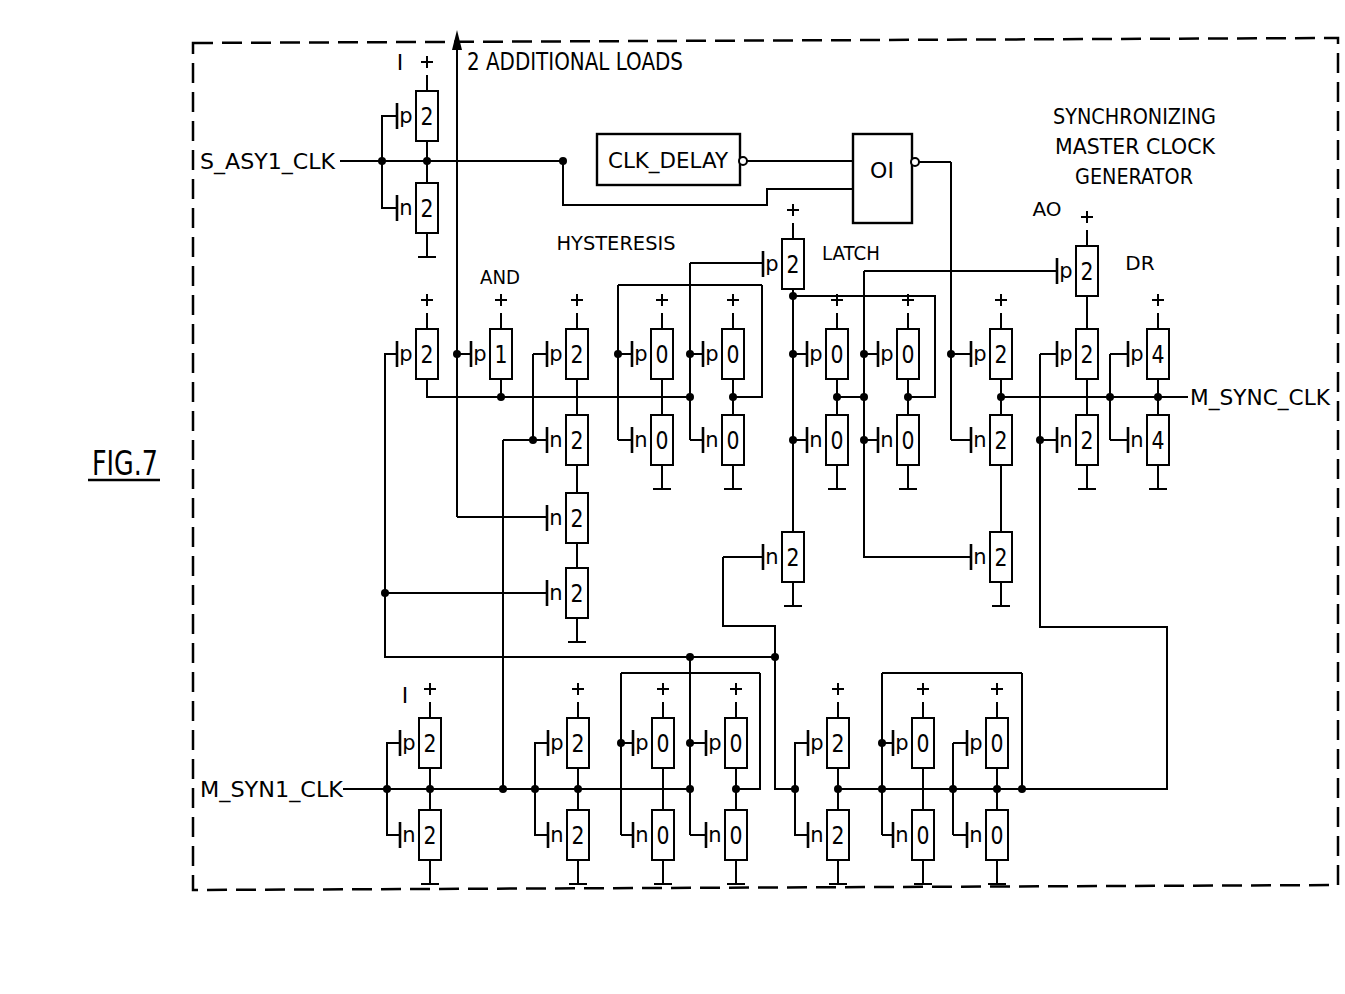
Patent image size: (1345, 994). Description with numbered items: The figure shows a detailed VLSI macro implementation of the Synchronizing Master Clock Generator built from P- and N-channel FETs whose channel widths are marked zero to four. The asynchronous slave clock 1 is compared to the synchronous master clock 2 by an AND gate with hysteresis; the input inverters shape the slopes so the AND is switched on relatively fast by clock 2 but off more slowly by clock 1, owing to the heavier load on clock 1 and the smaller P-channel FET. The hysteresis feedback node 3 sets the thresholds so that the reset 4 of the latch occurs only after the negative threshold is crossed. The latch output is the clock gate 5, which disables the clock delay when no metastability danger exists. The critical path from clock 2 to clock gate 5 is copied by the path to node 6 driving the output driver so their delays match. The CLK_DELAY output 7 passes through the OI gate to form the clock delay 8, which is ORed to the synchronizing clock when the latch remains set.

The asynchronous slave clock 1 is at (637, 328).
The synchronous master clock 2 is at (516, 775).
The hysteresis AND-gate node 3 is at (588, 571).
The latch reset signal 4 is at (726, 335).
The clock gate 5 is at (960, 399).
The clock driver control node 6 is at (1094, 571).
The clock delay output 7 is at (796, 146).
The clock delay (OI output) 8 is at (931, 284).